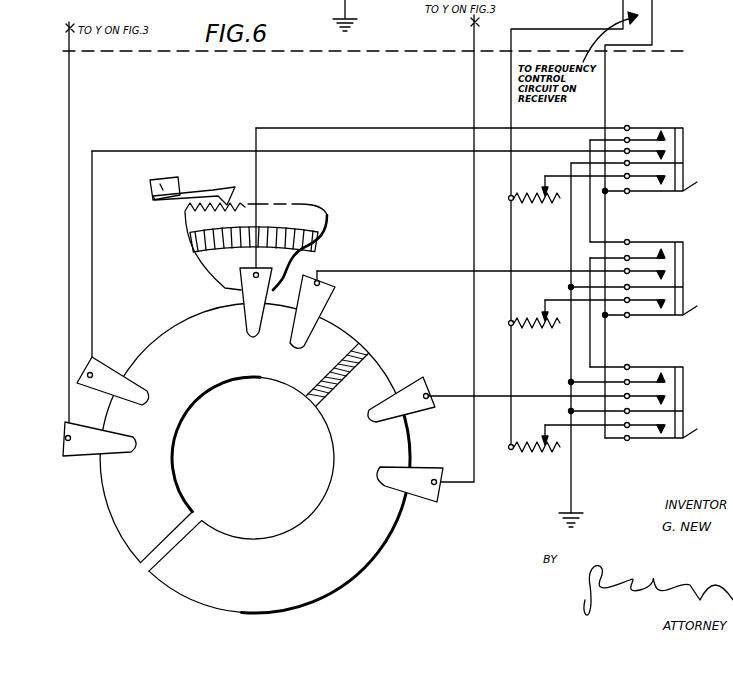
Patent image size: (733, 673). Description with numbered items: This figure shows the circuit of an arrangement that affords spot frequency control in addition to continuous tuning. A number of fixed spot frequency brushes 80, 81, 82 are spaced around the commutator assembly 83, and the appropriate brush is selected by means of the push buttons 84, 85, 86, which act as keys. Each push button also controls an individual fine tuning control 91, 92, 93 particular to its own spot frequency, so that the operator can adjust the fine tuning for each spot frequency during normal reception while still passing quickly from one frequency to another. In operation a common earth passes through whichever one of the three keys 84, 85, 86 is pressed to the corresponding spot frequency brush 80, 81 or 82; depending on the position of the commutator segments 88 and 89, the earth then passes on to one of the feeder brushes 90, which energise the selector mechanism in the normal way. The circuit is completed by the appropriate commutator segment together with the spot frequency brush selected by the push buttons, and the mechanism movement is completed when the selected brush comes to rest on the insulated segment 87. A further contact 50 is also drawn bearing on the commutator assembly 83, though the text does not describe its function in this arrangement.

The contact arm 50 is at (240, 295).
The spot frequency brush 80 is at (401, 391).
The spot frequency brush 81 is at (324, 311).
The spot frequency brush 82 is at (113, 372).
The commutator assembly 83 is at (253, 461).
The push button 84 is at (569, 403).
The push button 85 is at (515, 279).
The push button 86 is at (400, 160).
The insulated segment 87 is at (351, 366).
The commutator segment 88 is at (247, 360).
The commutator segment 89 is at (225, 558).
The feeder brush 90 is at (253, 454).
The fine tuning control 91 is at (535, 330).
The fine tuning control 92 is at (535, 454).
The fine tuning control 93 is at (535, 204).